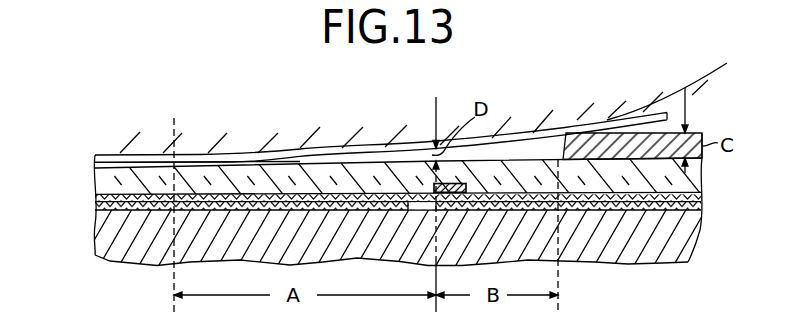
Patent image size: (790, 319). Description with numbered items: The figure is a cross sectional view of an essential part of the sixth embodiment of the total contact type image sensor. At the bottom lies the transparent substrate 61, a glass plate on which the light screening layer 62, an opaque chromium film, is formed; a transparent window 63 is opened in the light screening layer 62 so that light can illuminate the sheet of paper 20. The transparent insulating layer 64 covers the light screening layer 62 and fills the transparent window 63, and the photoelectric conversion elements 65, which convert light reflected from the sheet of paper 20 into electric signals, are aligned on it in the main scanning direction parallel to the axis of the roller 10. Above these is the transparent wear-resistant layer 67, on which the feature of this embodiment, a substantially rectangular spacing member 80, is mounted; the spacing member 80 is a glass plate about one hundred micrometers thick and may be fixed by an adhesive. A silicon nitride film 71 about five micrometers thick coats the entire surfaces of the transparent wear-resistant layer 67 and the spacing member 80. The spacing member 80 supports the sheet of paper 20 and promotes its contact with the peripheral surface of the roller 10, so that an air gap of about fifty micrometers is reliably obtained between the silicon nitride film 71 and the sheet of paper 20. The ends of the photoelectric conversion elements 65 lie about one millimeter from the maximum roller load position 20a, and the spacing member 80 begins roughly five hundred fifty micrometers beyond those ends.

The roller 10 is at (705, 87).
The sheet of paper 20 is at (622, 120).
The maximum roller load position 20a is at (183, 168).
The transparent substrate 61 is at (684, 236).
The light screening layer 62 is at (94, 207).
The transparent window 63 is at (413, 210).
The transparent insulating layer 64 is at (95, 196).
The photoelectric conversion elements 65 is at (458, 194).
The transparent wear-resistant layer 67 is at (96, 180).
The silicon nitride film 71 is at (95, 162).
The spacing member 80 is at (580, 145).